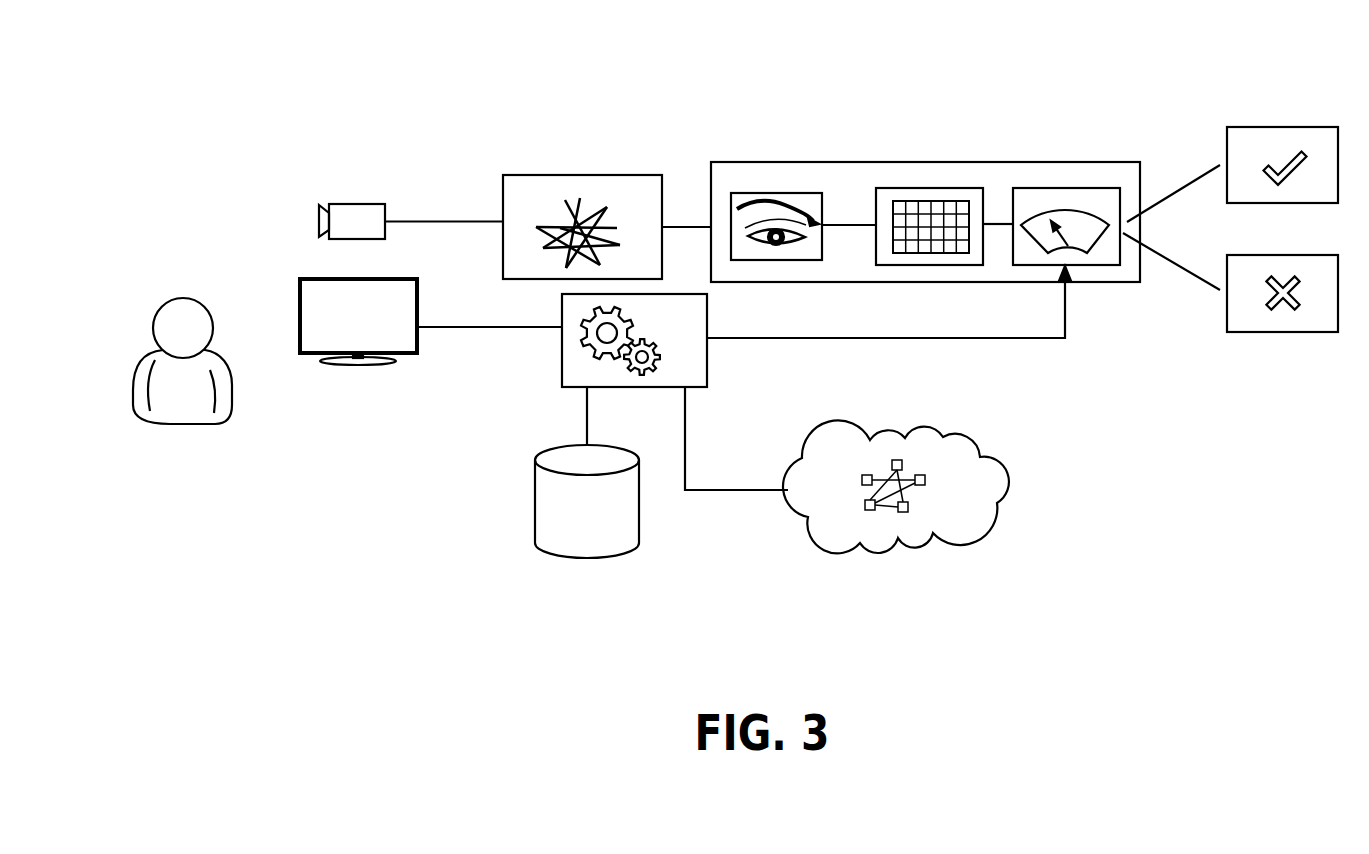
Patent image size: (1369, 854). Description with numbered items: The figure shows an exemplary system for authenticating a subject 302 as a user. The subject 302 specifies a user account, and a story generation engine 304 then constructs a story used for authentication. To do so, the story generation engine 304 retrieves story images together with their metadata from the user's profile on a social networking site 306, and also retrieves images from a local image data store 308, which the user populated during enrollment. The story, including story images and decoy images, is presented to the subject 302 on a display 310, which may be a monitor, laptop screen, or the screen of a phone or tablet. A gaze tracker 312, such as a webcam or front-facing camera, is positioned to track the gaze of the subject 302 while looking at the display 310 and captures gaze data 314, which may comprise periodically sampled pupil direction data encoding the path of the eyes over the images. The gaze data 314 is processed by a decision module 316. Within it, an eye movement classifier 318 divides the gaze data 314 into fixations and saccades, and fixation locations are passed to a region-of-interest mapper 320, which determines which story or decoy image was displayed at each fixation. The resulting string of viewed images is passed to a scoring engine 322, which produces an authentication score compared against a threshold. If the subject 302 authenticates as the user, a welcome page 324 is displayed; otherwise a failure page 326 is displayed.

The subject 302 is at (208, 427).
The story generation engine 304 is at (561, 372).
The social networking site 306 is at (918, 558).
The local image data store 308 is at (605, 560).
The display 310 is at (407, 358).
The gaze tracker 312 is at (357, 204).
The gaze data 314 is at (585, 175).
The decision module 316 is at (750, 162).
The eye movement classifier 318 is at (800, 193).
The region-of-interest mapper 320 is at (928, 188).
The scoring engine 322 is at (1060, 188).
The welcome page 324 is at (1320, 127).
The failure page 326 is at (1285, 332).